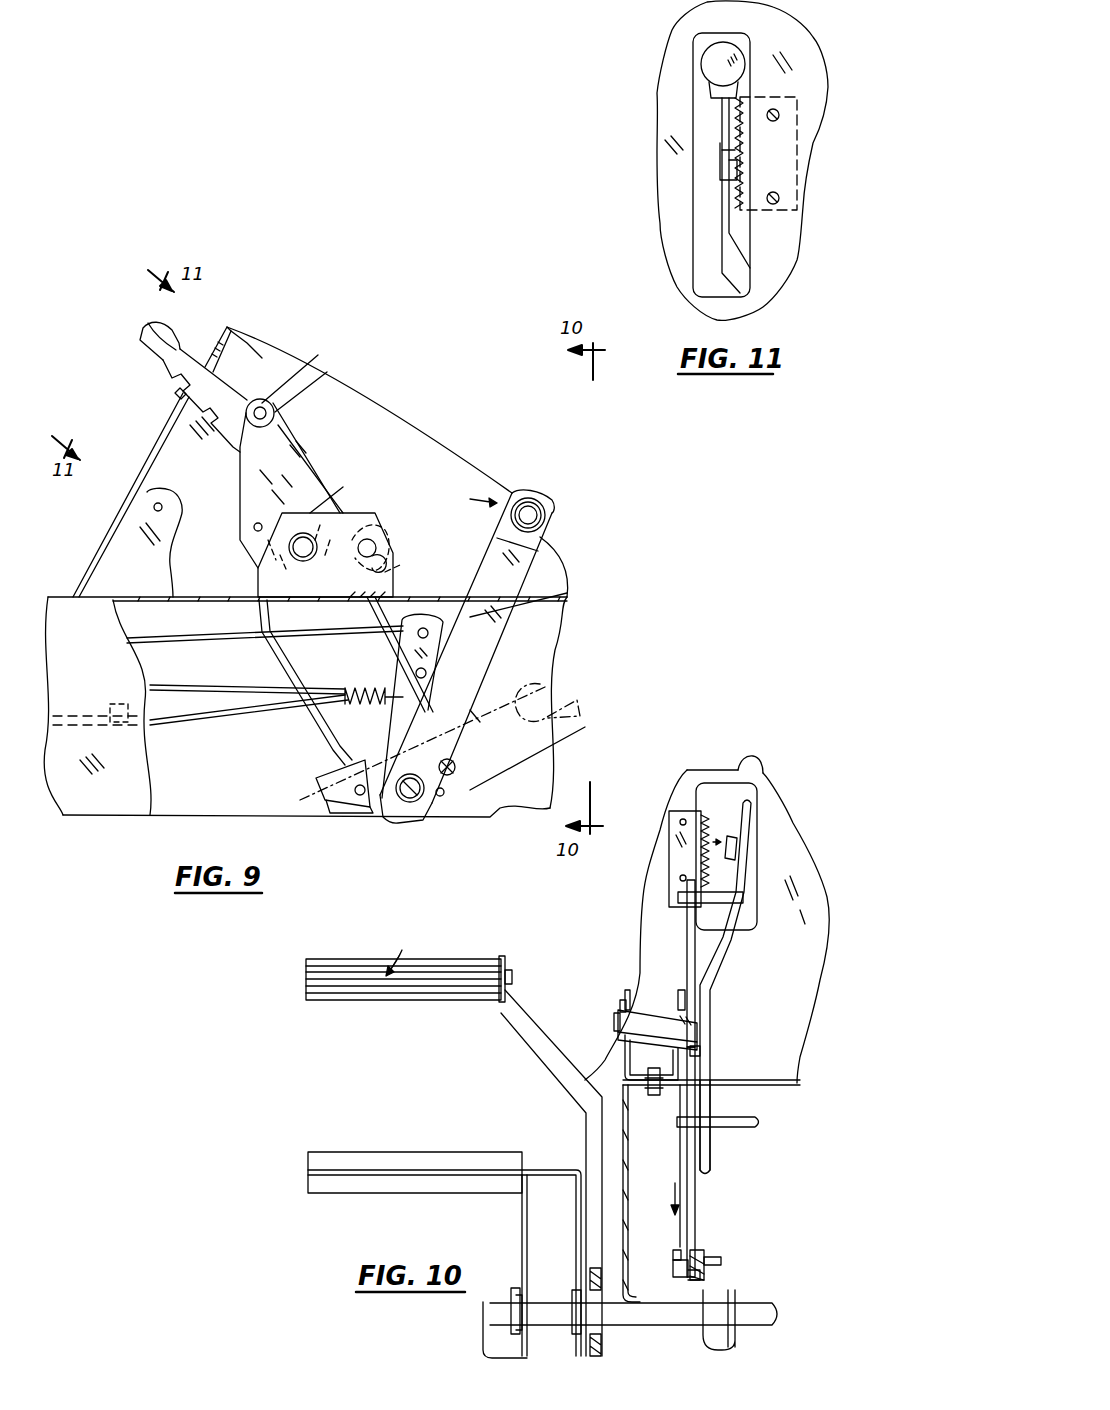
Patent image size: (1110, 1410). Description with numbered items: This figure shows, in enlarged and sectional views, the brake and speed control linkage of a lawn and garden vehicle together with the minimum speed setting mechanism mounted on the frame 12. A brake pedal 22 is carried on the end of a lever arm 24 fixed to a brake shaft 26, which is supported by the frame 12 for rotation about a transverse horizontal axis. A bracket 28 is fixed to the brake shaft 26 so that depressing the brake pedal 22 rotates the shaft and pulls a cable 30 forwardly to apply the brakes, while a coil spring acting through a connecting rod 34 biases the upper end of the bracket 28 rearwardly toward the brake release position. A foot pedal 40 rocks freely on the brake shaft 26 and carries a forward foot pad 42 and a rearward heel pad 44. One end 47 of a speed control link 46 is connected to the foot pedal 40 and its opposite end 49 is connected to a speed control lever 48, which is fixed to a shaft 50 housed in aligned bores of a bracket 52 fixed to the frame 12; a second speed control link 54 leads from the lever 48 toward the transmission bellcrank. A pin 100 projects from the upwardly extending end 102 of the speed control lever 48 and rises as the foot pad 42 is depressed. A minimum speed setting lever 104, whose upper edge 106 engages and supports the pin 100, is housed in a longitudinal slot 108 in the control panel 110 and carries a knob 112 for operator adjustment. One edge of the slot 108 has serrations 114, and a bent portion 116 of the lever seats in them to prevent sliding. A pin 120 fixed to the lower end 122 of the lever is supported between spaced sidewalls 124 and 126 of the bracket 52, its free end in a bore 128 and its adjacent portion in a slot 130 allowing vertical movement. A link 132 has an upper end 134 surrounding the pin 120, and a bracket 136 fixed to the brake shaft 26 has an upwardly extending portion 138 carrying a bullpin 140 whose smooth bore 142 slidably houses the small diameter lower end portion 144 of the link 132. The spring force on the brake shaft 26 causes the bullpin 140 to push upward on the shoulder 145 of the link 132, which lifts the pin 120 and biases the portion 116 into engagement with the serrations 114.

In FIG. 9, the frame 12 is at (70, 597).
In FIG. 10, the frame 12 is at (630, 1165).
In FIG. 9, the brake pedal 22 is at (550, 520).
In FIG. 10, the brake pedal 22 is at (352, 956).
In FIG. 9, the lever arm 24 is at (545, 568).
In FIG. 10, the lever arm 24 is at (515, 1030).
In FIG. 9, the brake shaft 26 is at (400, 800).
In FIG. 10, the brake shaft 26 is at (686, 1327).
In FIG. 9, the bracket 28 is at (455, 598).
In FIG. 9, the cable 30 is at (210, 686).
In FIG. 9, the connecting rod 34 is at (206, 722).
In FIG. 9, the foot pedal 40 is at (322, 792).
In FIG. 10, the foot pedal 40 is at (522, 1230).
In FIG. 9, the foot pad 42 is at (556, 690).
In FIG. 10, the foot pad 42 is at (398, 1152).
In FIG. 9, the heel pad 44 is at (318, 780).
In FIG. 9, the speed control link 46 is at (306, 718).
In FIG. 10, the speed control link 46 is at (718, 1104).
In FIG. 9, the one end 47 is at (354, 797).
In FIG. 9, the speed control lever 48 is at (290, 438).
In FIG. 10, the speed control lever 48 is at (686, 920).
In FIG. 9, the opposite end 49 is at (254, 527).
In FIG. 9, the shaft 50 is at (294, 533).
In FIG. 9, the bracket 52 is at (350, 510).
In FIG. 10, the bracket 52 is at (622, 1047).
In FIG. 9, the second speed control link 54 is at (190, 632).
In FIG. 10, the second speed control link 54 is at (760, 1122).
In FIG. 9, the pin 100 is at (316, 372).
In FIG. 10, the pin 100 is at (745, 895).
In FIG. 9, the upwardly extending end 102 is at (316, 364).
In FIG. 10, the upwardly extending end 102 is at (672, 880).
In FIG. 9, the minimum speed setting lever 104 is at (218, 395).
In FIG. 10, the minimum speed setting lever 104 is at (720, 958).
In FIG. 11, the minimum speed setting lever 104 is at (720, 112).
In FIG. 9, the upper edge 106 is at (244, 345).
In FIG. 10, the upper edge 106 is at (742, 847).
In FIG. 9, the longitudinal slot 108 is at (212, 342).
In FIG. 10, the longitudinal slot 108 is at (726, 856).
In FIG. 11, the longitudinal slot 108 is at (697, 203).
In FIG. 9, the control panel 110 is at (128, 508).
In FIG. 10, the control panel 110 is at (707, 926).
In FIG. 11, the control panel 110 is at (802, 82).
In FIG. 9, the knob 112 is at (140, 345).
In FIG. 10, the knob 112 is at (764, 770).
In FIG. 11, the knob 112 is at (706, 62).
In FIG. 10, the serrations 114 is at (707, 838).
In FIG. 11, the serrations 114 is at (742, 132).
In FIG. 9, the portion 116 is at (178, 396).
In FIG. 10, the portion 116 is at (721, 835).
In FIG. 11, the portion 116 is at (726, 170).
In FIG. 9, the pin 120 is at (372, 545).
In FIG. 10, the pin 120 is at (626, 988).
In FIG. 9, the lower end 122 is at (375, 520).
In FIG. 10, the lower end 122 is at (700, 1020).
In FIG. 10, the sidewall 124 is at (622, 1002).
In FIG. 10, the sidewall 126 is at (680, 988).
In FIG. 10, the bore 128 is at (614, 1020).
In FIG. 9, the slot 130 is at (385, 560).
In FIG. 10, the slot 130 is at (636, 1056).
In FIG. 9, the link 132 is at (385, 646).
In FIG. 10, the link 132 is at (697, 1202).
In FIG. 9, the upper end 134 is at (400, 565).
In FIG. 10, the upper end 134 is at (702, 1052).
In FIG. 9, the bracket 136 is at (440, 798).
In FIG. 10, the bracket 136 is at (742, 1330).
In FIG. 10, the portion 138 is at (712, 1258).
In FIG. 9, the bullpin 140 is at (470, 773).
In FIG. 10, the bullpin 140 is at (700, 1250).
In FIG. 10, the smooth bore 142 is at (673, 1264).
In FIG. 10, the lower end portion 144 is at (686, 1276).
In FIG. 10, the shoulder 145 is at (674, 1254).